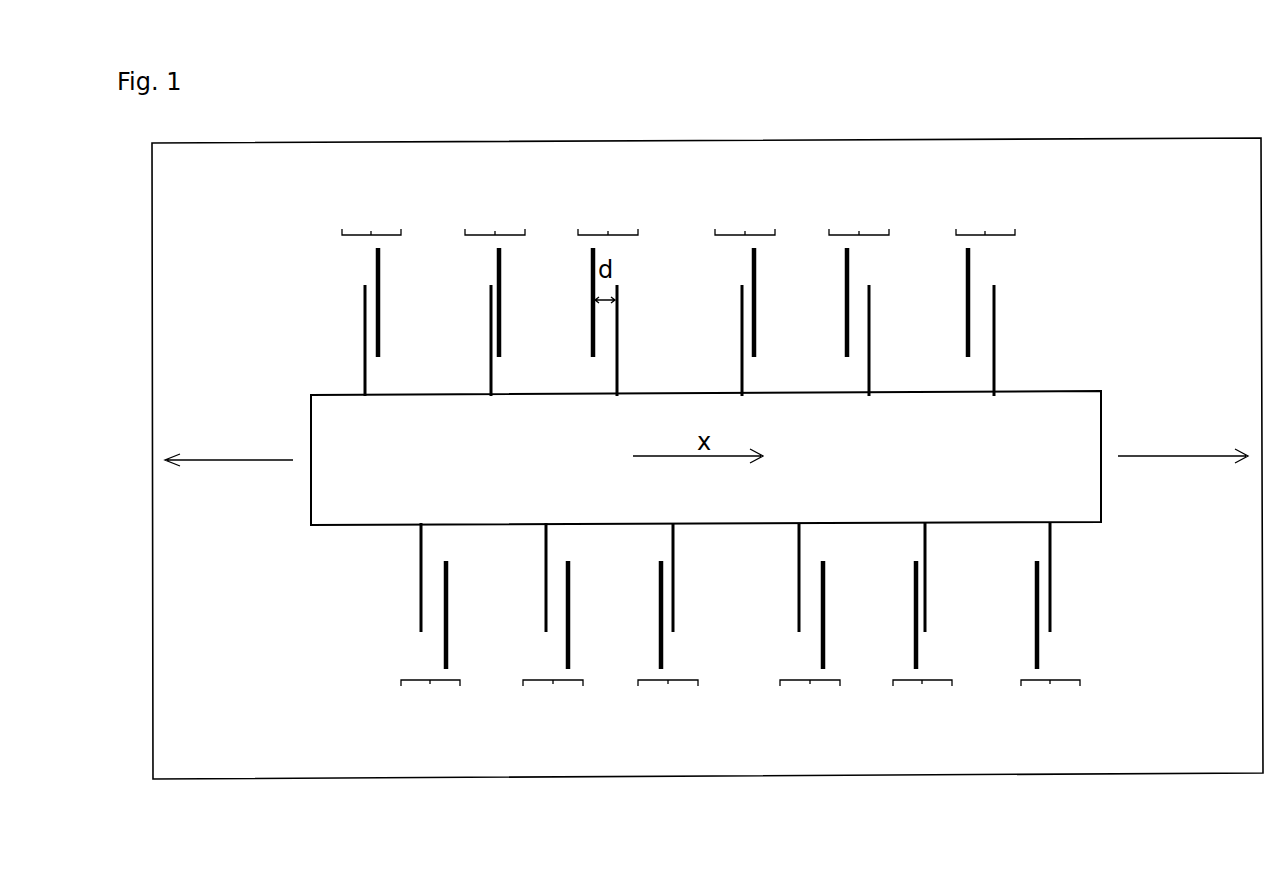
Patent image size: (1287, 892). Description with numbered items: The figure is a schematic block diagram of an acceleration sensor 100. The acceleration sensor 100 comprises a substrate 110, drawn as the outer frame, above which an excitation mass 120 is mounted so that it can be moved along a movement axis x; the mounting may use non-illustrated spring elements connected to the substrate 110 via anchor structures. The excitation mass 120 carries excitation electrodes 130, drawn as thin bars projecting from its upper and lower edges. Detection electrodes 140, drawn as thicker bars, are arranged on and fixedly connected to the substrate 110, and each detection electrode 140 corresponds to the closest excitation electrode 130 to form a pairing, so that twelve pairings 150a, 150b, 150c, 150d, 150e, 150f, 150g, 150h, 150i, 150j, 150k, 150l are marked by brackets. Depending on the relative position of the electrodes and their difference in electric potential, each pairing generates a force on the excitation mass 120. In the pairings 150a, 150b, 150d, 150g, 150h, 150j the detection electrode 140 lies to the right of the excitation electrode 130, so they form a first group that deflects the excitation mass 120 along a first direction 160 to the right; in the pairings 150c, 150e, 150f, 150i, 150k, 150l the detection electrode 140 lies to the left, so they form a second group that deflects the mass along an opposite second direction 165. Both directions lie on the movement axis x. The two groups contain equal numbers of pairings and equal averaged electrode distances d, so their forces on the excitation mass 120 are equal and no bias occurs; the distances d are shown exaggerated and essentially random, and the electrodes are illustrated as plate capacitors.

The acceleration sensor 100 is at (711, 112).
The substrate 110 is at (1193, 138).
The excitation mass 120 is at (1049, 391).
The excitation electrodes 130 is at (365, 340).
The detection electrodes 140 is at (381, 258).
The pairing 150a is at (364, 228).
The pairing 150b is at (488, 228).
The pairing 150c is at (602, 228).
The pairing 150d is at (738, 228).
The pairing 150e is at (853, 228).
The pairing 150f is at (979, 228).
The pairing 150g is at (437, 688).
The pairing 150h is at (560, 688).
The pairing 150i is at (674, 688).
The pairing 150j is at (815, 688).
The pairing 150k is at (927, 688).
The pairing 150l is at (1055, 688).
The first direction 160 is at (1217, 460).
The second direction 165 is at (270, 458).